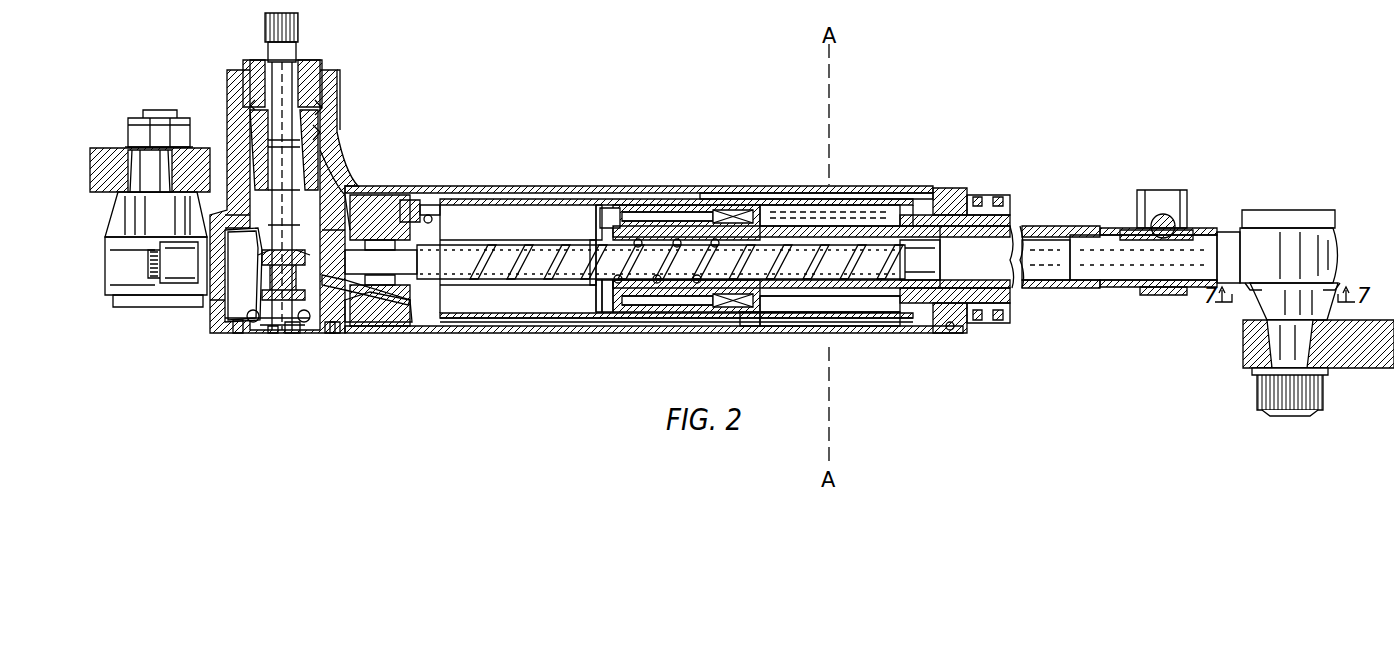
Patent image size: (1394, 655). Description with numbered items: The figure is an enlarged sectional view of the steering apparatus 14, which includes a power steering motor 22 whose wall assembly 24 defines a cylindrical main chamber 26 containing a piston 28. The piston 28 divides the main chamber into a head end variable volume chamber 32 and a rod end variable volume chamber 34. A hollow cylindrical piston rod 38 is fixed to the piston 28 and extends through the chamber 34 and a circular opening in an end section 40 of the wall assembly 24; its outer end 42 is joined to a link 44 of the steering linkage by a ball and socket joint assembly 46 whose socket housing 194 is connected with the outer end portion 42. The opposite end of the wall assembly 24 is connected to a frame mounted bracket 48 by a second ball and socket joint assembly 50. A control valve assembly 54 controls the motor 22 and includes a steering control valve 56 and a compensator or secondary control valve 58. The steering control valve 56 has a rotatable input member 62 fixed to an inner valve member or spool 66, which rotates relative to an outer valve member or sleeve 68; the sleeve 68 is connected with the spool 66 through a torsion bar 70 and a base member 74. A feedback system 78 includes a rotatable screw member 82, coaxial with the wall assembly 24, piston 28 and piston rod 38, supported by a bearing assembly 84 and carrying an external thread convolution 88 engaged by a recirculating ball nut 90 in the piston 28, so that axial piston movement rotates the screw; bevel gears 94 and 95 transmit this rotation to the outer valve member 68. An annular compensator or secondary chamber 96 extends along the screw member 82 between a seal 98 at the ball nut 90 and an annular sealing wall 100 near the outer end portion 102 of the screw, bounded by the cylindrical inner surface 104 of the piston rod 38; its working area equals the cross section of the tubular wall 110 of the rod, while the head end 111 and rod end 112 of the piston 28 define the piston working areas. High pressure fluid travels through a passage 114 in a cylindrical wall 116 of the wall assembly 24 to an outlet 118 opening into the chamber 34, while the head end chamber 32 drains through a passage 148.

The steering apparatus 14 is at (647, 98).
The power steering motor 22 is at (687, 180).
The wall assembly 24 is at (861, 185).
The cylindrical main chamber 26 is at (499, 313).
The piston 28 is at (652, 313).
The head end variable volume chamber 32 is at (543, 300).
The rod end variable volume chamber 34 is at (813, 300).
The hollow cylindrical piston rod 38 is at (1044, 224).
The end section 40 is at (973, 205).
The outer end 42 is at (1184, 222).
The link 44 is at (1353, 344).
The ball and socket joint assembly 46 is at (1310, 211).
The frame mounted bracket 48 is at (115, 160).
The second ball and socket joint assembly 50 is at (147, 298).
The control valve assembly 54 is at (403, 134).
The steering control valve 56 is at (341, 64).
The compensator or secondary control valve 58 is at (706, 312).
The rotatable input member 62 is at (276, 48).
The inner valve member or spool 66 is at (320, 132).
The outer valve member or sleeve 68 is at (255, 105).
The torsion bar 70 is at (322, 108).
The base member 74 is at (254, 250).
The feedback system 78 is at (273, 333).
The screw member 82 is at (515, 246).
The bearing assembly 84 is at (394, 334).
The external thread convolution 88 is at (586, 242).
The recirculating ball nut 90 is at (641, 218).
The bevel gear 94 is at (289, 334).
The bevel gear 95 is at (335, 333).
The compensator or secondary chamber 96 is at (764, 310).
The seal 98 is at (610, 300).
The annular sealing wall 100 is at (924, 315).
The outer end portion 102 is at (947, 330).
The cylindrical inner surface 104 is at (1020, 238).
The tubular wall 110 is at (800, 228).
The head end 111 is at (592, 298).
The rod end 112 is at (751, 317).
The passage 114 is at (448, 188).
The cylindrical wall 116 is at (495, 195).
The outlet 118 is at (911, 200).
The passage 148 is at (349, 335).
The socket housing 194 is at (1254, 292).